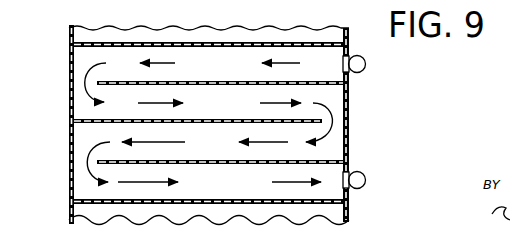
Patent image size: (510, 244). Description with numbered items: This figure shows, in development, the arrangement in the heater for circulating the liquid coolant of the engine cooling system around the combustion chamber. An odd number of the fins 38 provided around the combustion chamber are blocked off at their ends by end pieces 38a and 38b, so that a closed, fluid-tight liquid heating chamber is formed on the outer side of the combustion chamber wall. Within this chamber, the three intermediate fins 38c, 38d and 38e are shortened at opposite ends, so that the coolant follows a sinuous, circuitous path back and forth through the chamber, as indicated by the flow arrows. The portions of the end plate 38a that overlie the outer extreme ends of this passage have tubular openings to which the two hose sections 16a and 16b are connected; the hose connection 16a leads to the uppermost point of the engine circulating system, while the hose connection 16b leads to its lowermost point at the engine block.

The fins 38 is at (290, 42).
The end piece 38a is at (349, 127).
The end piece 38b is at (69, 180).
The intermediate fin 38c is at (240, 81).
The intermediate fin 38d is at (243, 119).
The intermediate fin 38e is at (245, 164).
The hose connection 16a is at (361, 71).
The hose connection 16b is at (362, 173).